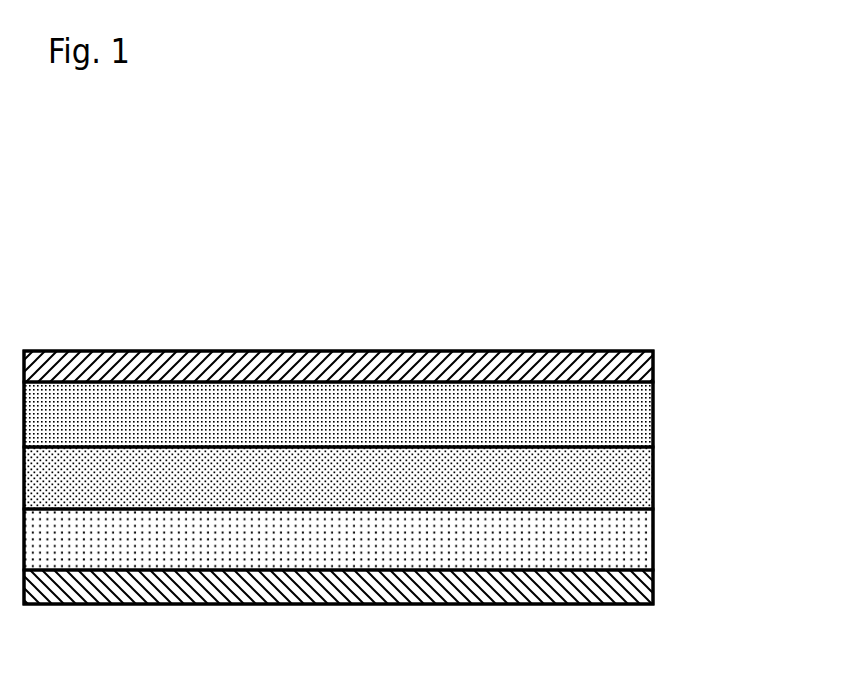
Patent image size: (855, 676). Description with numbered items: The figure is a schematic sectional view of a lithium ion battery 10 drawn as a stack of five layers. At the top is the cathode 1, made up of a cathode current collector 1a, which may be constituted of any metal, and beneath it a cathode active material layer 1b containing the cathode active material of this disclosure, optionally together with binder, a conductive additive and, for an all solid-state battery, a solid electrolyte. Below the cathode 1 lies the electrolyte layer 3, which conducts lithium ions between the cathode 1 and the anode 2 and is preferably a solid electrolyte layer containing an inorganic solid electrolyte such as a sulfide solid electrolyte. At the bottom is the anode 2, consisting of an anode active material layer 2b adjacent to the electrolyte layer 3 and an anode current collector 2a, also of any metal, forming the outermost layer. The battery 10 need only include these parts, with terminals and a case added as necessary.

The lithium ion battery 10 is at (355, 280).
The cathode 1 is at (414, 391).
The cathode current collector 1a is at (638, 363).
The cathode active material layer 1b is at (388, 414).
The electrolyte layer 3 is at (640, 482).
The anode 2 is at (413, 564).
The anode active material layer 2b is at (640, 540).
The anode current collector 2a is at (388, 587).